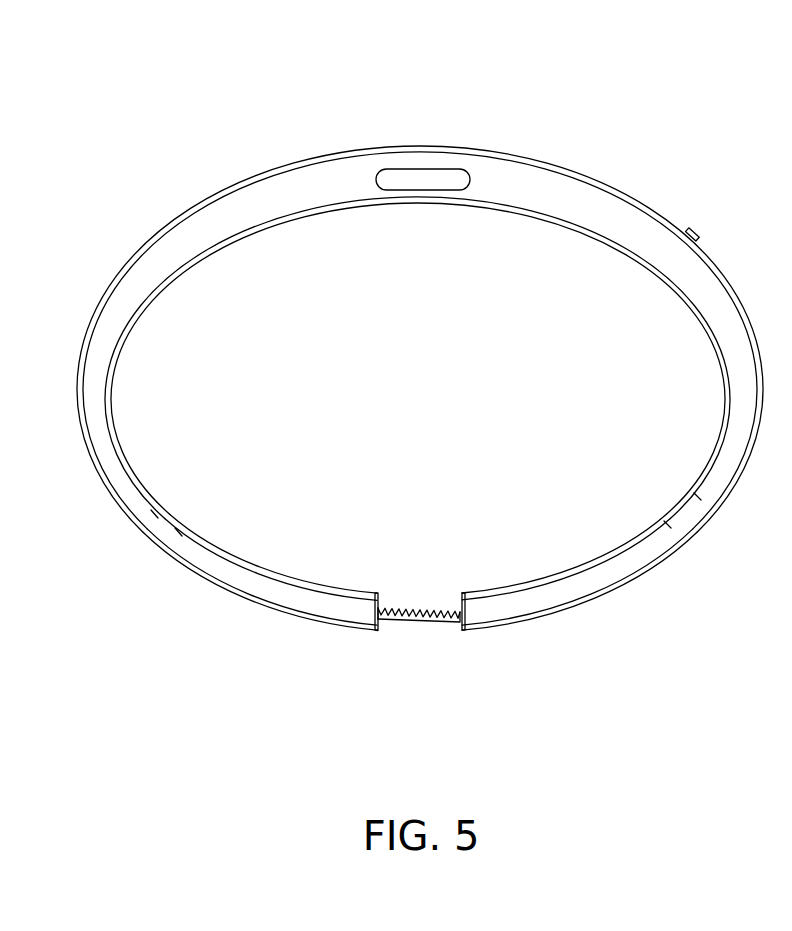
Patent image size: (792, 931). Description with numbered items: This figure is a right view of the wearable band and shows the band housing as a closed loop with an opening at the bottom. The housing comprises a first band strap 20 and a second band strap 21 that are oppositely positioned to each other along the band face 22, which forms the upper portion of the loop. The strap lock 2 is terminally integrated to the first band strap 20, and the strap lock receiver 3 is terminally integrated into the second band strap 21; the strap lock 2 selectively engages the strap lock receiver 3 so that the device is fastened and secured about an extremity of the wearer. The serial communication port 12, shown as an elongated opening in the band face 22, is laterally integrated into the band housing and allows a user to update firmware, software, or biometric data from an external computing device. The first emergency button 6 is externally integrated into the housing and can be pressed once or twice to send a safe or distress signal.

The strap lock 2 is at (440, 620).
The strap lock receiver 3 is at (455, 603).
The first emergency button 6 is at (693, 232).
The serial communication port 12 is at (433, 175).
The first band strap 20 is at (225, 575).
The second band strap 21 is at (643, 557).
The band face 22 is at (342, 157).